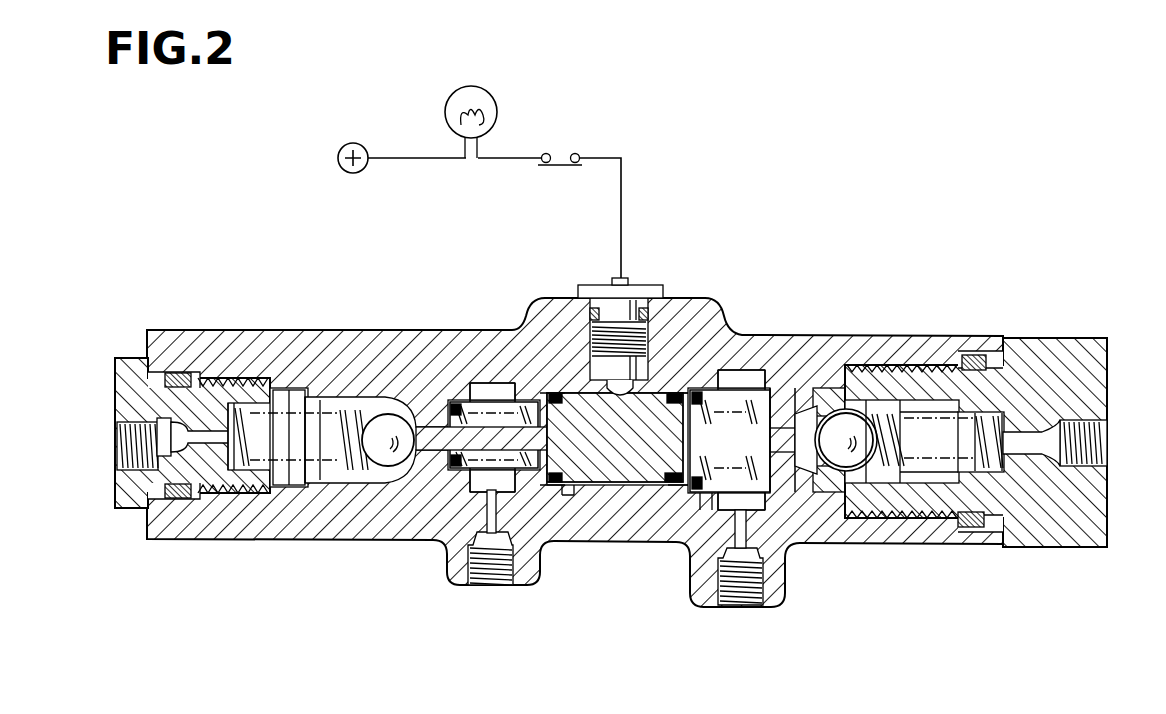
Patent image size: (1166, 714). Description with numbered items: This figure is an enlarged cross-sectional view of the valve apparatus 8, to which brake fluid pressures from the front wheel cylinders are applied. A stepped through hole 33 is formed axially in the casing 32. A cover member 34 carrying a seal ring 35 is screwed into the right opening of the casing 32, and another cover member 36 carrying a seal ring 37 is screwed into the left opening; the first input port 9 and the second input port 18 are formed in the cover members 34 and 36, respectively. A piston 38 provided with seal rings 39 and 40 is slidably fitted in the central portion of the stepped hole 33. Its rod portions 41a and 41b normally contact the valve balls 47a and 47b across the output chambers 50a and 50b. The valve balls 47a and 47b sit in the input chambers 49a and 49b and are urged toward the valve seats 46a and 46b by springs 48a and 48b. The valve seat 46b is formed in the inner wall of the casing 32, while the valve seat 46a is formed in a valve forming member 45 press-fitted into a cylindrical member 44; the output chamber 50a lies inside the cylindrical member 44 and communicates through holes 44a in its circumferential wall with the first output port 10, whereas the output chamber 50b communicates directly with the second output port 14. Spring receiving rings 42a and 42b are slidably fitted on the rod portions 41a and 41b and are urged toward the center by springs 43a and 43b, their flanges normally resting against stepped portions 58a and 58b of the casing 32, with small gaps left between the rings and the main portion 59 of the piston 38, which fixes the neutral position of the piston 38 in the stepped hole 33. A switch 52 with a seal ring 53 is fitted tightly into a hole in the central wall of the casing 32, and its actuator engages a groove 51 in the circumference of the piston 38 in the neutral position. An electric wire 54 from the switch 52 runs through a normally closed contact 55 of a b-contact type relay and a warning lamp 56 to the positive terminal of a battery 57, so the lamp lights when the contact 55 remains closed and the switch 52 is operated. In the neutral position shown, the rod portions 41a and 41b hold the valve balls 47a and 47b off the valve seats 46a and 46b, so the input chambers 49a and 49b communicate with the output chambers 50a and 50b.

The valve apparatus 8 is at (754, 224).
The first input port 9 is at (1098, 448).
The first output port 10 is at (746, 600).
The second output port 14 is at (498, 585).
The second input port 18 is at (118, 445).
The casing 32 is at (826, 345).
The stepped through hole 33 is at (622, 500).
The cover member 34 is at (1052, 370).
The seal ring 35 is at (977, 355).
The cover member 36 is at (122, 402).
The seal ring 37 is at (178, 372).
The piston 38 is at (618, 492).
The seal ring 39 is at (548, 393).
The seal ring 40 is at (684, 392).
The rod portion 41a is at (768, 492).
The rod portion 41b is at (452, 470).
The spring receiving ring 42a is at (700, 390).
The spring receiving ring 42b is at (536, 400).
The spring 43a is at (735, 388).
The spring 43b is at (458, 404).
The cylindrical member 44 is at (826, 478).
The holes 44a is at (700, 512).
The valve forming member 45 is at (838, 388).
The valve seat 46a is at (904, 500).
The valve seat 46b is at (388, 468).
The valve ball 47a is at (870, 400).
The valve ball 47b is at (320, 482).
The spring 48a is at (1004, 520).
The spring 48b is at (238, 478).
The input chamber 49a is at (920, 400).
The input chamber 49b is at (300, 405).
The output chamber 50a is at (764, 404).
The output chamber 50b is at (460, 403).
The groove 51 is at (603, 434).
The switch 52 is at (640, 298).
The seal ring 53 is at (600, 300).
The electric wire 54 is at (623, 178).
The contact 55 is at (557, 152).
The warning lamp 56 is at (447, 111).
The battery 57 is at (352, 143).
The stepped portion 58a is at (672, 485).
The stepped portion 58b is at (552, 394).
The main portion 59 is at (566, 500).